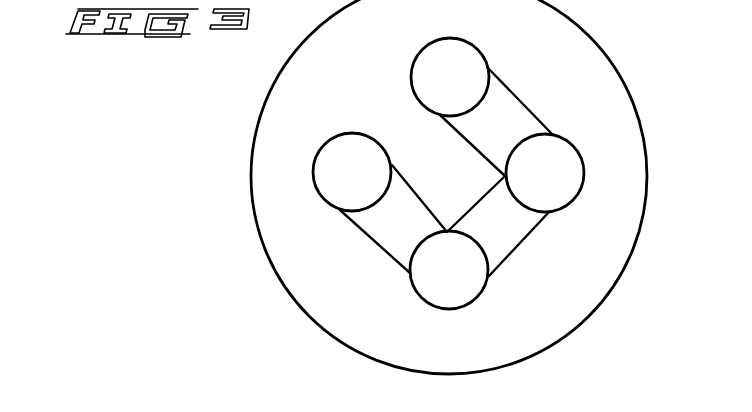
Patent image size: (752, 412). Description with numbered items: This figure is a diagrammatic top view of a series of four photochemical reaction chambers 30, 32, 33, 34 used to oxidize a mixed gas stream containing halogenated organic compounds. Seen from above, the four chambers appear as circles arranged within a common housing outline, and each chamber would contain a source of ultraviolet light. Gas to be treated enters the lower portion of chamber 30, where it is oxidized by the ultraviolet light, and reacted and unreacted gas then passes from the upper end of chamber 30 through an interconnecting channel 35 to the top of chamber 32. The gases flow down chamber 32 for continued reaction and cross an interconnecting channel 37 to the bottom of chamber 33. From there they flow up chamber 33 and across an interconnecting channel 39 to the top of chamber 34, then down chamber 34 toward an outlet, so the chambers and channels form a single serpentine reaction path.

The photochemical reaction chamber 30 is at (327, 165).
The photochemical reaction chamber 32 is at (458, 293).
The photochemical reaction chamber 33 is at (572, 172).
The photochemical reaction chamber 34 is at (443, 55).
The interconnecting channel 35 is at (383, 228).
The interconnecting channel 37 is at (512, 230).
The interconnecting channel 39 is at (507, 117).